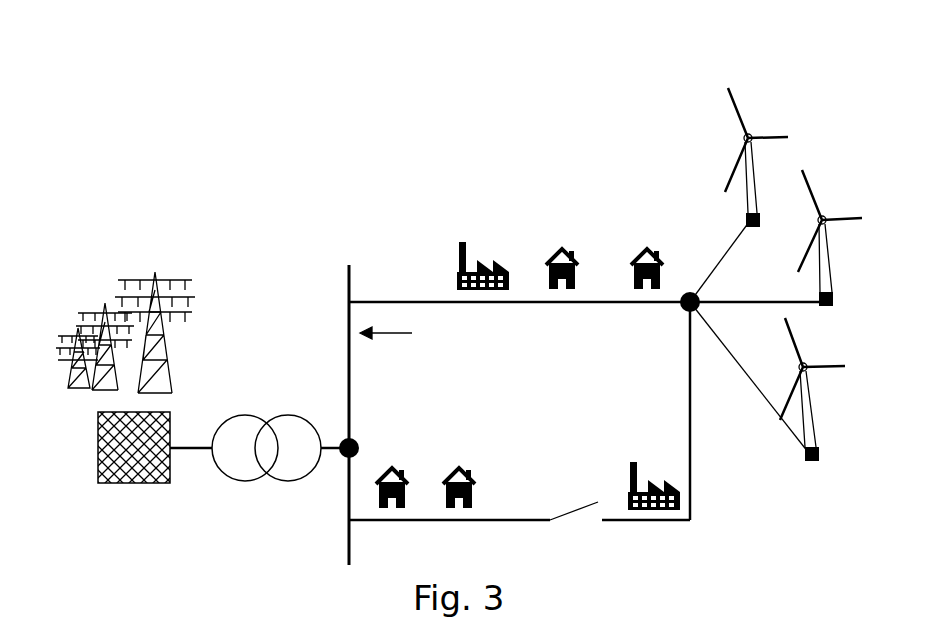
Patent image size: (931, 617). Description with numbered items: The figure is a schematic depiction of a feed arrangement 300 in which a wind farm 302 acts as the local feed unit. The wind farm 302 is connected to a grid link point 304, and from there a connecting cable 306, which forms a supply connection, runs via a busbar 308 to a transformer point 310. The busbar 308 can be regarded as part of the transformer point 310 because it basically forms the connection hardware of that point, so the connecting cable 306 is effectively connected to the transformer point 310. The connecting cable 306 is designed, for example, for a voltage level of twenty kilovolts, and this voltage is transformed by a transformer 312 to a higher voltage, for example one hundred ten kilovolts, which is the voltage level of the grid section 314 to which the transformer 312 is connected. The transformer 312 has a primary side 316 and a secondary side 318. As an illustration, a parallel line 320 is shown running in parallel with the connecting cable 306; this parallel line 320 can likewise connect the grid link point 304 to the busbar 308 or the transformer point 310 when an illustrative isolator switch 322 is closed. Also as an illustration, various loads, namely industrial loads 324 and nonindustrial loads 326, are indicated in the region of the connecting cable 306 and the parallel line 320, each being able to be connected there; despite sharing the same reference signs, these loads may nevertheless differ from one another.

The feed arrangement 300 is at (282, 262).
The wind farm 302 is at (755, 86).
The grid link point 304 is at (682, 312).
The connecting cable 306 is at (398, 300).
The busbar 308 is at (333, 270).
The transformer point 310 is at (360, 440).
The transformer 312 is at (268, 402).
The grid section 314 is at (186, 440).
The primary side 316 is at (311, 415).
The secondary side 318 is at (230, 480).
The parallel line 320 is at (727, 494).
The isolator switch 322 is at (568, 533).
The industrial loads 324 is at (480, 262).
The nonindustrial loads 326 is at (580, 255).